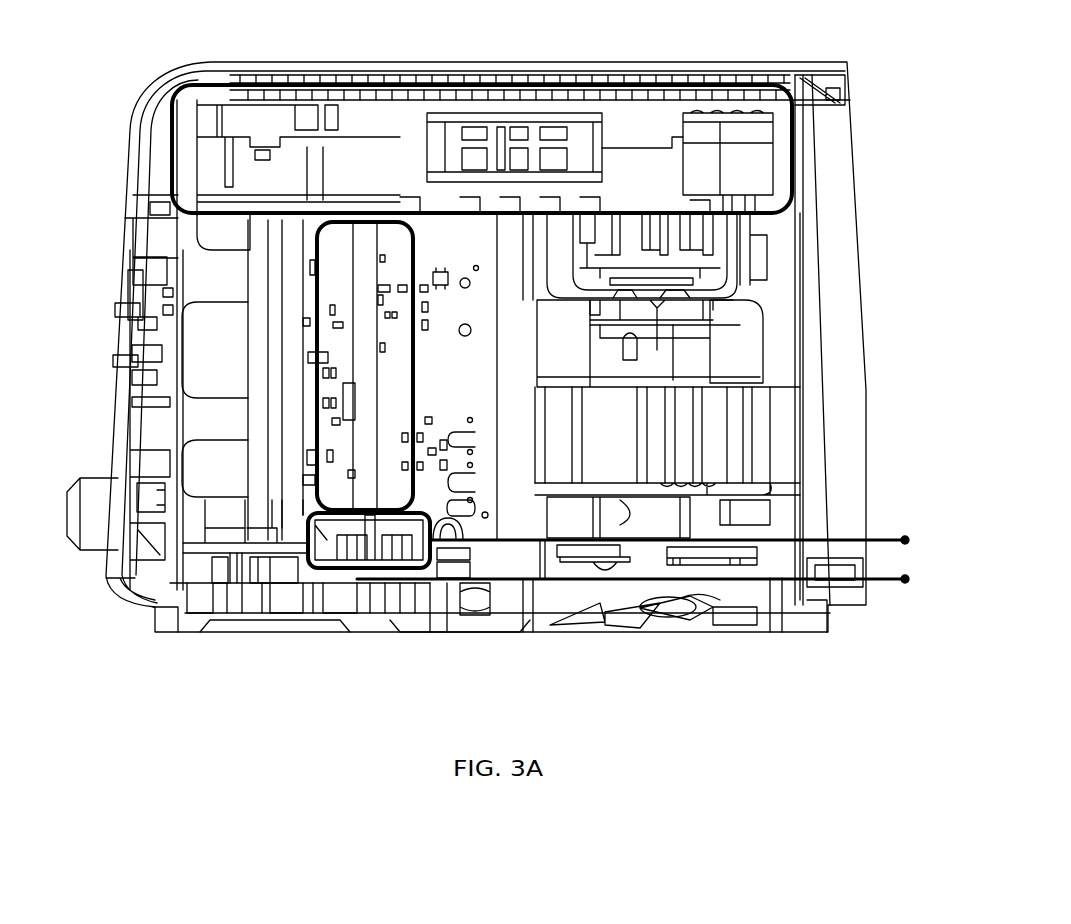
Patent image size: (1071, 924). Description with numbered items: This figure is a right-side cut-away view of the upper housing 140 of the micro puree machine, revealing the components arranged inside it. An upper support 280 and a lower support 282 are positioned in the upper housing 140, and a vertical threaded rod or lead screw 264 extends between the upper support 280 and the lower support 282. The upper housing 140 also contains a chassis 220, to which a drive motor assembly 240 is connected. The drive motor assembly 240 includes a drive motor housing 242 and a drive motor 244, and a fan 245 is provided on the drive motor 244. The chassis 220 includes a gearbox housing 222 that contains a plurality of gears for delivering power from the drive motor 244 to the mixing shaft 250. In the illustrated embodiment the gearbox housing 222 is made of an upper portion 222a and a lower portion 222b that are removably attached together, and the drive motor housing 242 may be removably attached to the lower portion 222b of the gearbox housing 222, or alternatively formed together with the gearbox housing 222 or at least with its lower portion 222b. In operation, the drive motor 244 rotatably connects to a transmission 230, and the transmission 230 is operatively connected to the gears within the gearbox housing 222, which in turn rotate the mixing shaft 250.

The upper housing 140 is at (466, 347).
The chassis 220 is at (792, 152).
The gearbox housing 222 is at (260, 123).
The upper portion of the gearbox housing 222a is at (617, 125).
The lower portion of the gearbox housing 222b is at (258, 178).
The upper support 280 is at (548, 80).
The transmission 230 is at (713, 260).
The drive motor housing 242 is at (813, 325).
The drive motor assembly 240 is at (900, 340).
The lead screw 264 is at (413, 378).
The mixing shaft 250 is at (258, 432).
The drive motor 244 is at (760, 460).
The lower support 282 is at (263, 573).
The fan 245 is at (745, 615).